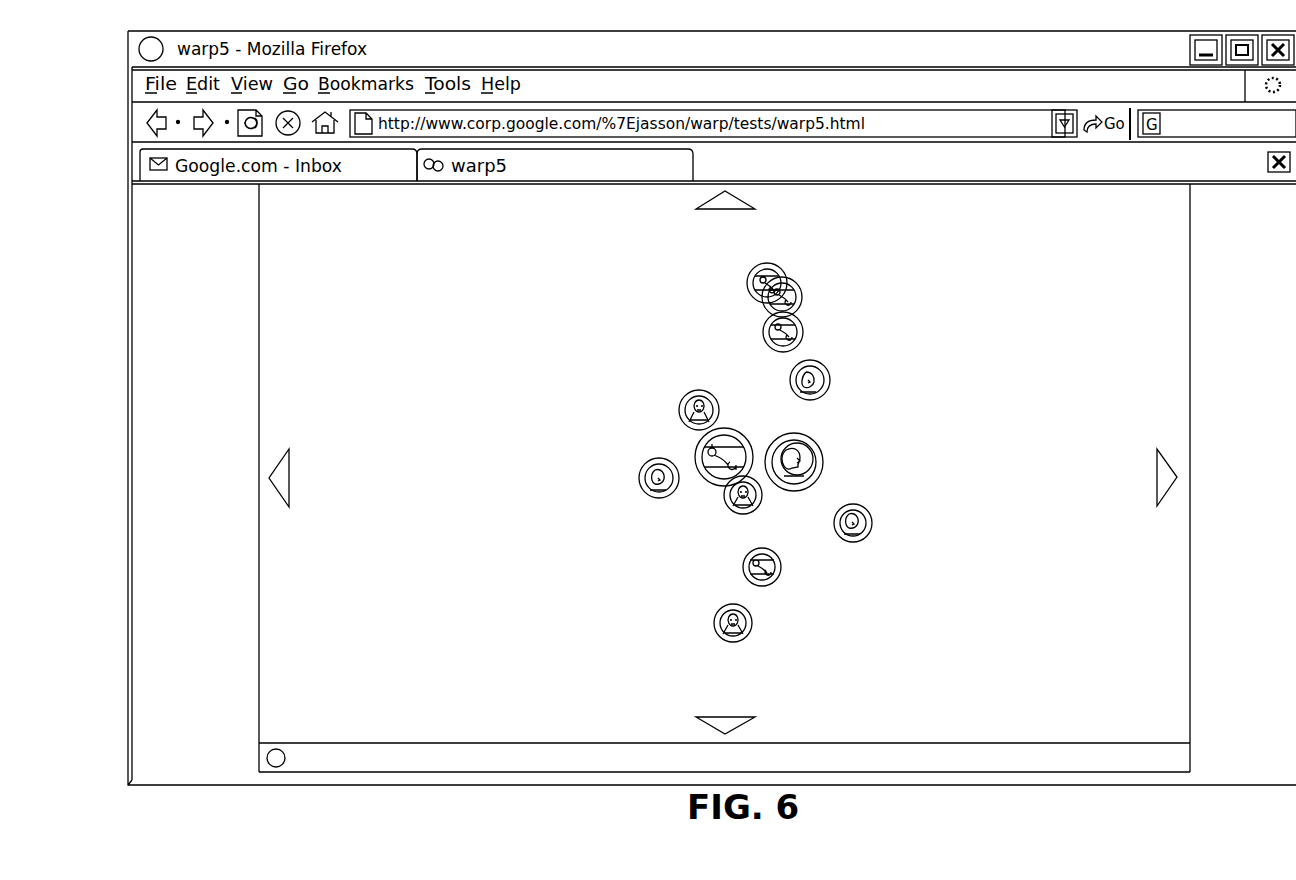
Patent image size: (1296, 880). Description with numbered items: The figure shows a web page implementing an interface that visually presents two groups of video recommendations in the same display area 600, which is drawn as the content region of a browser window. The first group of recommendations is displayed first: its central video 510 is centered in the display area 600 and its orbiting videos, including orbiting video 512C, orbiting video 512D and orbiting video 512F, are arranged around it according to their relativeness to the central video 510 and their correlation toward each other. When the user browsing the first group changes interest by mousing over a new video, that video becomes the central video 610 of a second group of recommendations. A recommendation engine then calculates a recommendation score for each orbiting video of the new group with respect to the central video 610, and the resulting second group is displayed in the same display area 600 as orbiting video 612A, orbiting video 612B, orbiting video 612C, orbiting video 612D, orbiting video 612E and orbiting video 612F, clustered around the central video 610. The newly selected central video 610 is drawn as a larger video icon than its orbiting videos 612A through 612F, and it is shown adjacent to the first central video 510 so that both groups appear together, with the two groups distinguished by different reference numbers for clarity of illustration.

The display area 600 is at (556, 341).
The central video 510 is at (732, 428).
The central video 610 is at (816, 430).
The orbiting video 612A is at (724, 495).
The orbiting video 612B is at (697, 390).
The orbiting video 612C is at (872, 520).
The orbiting video 612D is at (781, 555).
The orbiting video 612E is at (801, 305).
The orbiting video 612F is at (768, 263).
The orbiting video 512C is at (659, 458).
The orbiting video 512D is at (829, 372).
The orbiting video 512F is at (727, 604).